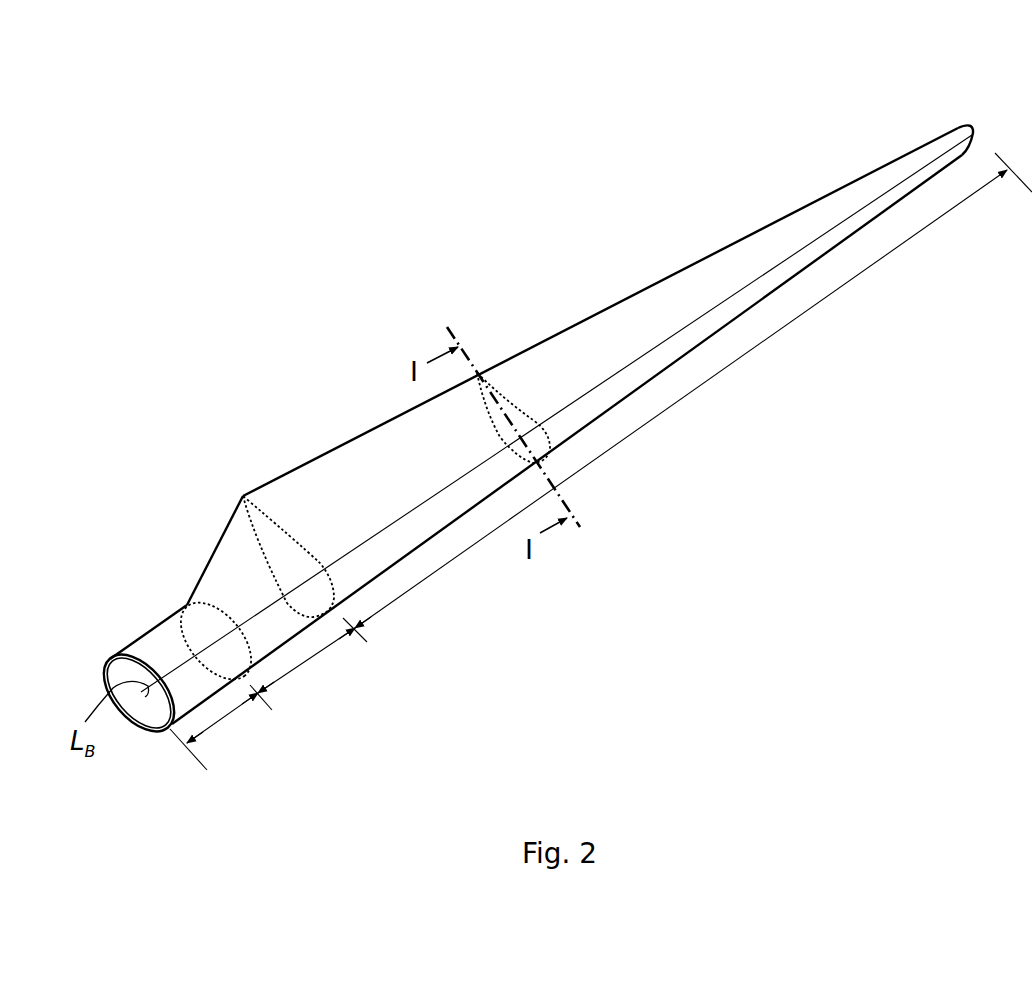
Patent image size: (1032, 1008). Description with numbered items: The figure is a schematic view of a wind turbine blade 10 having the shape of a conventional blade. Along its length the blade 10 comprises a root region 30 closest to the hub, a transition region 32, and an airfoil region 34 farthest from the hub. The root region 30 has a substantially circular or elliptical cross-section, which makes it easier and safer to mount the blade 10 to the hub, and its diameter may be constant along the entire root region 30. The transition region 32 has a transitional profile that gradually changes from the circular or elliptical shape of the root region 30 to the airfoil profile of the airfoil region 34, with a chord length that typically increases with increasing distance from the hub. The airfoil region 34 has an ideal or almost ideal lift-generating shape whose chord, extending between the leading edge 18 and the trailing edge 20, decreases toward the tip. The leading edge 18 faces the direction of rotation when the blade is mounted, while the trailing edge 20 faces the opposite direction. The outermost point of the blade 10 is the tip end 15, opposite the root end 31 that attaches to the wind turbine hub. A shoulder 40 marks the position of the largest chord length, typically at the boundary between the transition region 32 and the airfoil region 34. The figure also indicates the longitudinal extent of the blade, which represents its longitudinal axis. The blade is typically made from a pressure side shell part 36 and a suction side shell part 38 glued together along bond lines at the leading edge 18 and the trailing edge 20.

The wind turbine blade 10 is at (390, 318).
The tip end 15 is at (973, 128).
The leading edge 18 is at (710, 340).
The trailing edge 20 is at (617, 302).
The root region 30 is at (227, 720).
The root end 31 is at (203, 768).
The transition region 32 is at (310, 662).
The airfoil region 34 is at (615, 445).
The pressure side shell part 36 is at (122, 660).
The suction side shell part 38 is at (132, 722).
The shoulder 40 is at (243, 494).